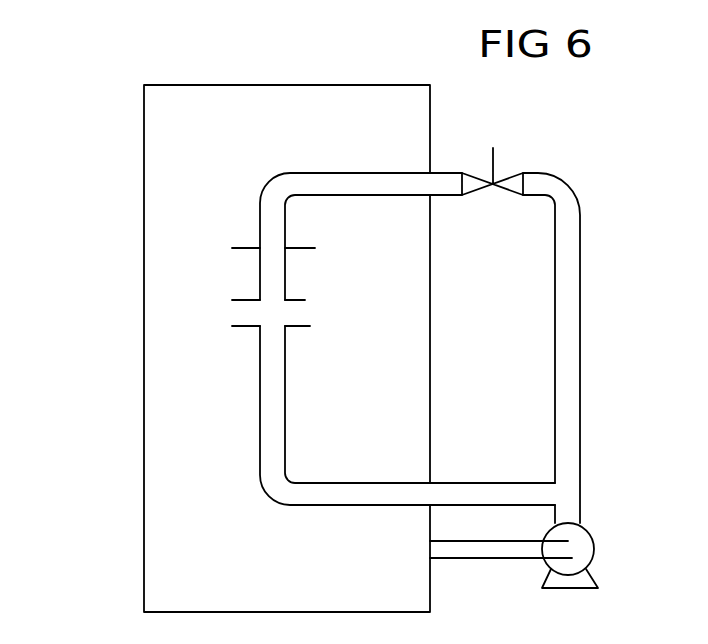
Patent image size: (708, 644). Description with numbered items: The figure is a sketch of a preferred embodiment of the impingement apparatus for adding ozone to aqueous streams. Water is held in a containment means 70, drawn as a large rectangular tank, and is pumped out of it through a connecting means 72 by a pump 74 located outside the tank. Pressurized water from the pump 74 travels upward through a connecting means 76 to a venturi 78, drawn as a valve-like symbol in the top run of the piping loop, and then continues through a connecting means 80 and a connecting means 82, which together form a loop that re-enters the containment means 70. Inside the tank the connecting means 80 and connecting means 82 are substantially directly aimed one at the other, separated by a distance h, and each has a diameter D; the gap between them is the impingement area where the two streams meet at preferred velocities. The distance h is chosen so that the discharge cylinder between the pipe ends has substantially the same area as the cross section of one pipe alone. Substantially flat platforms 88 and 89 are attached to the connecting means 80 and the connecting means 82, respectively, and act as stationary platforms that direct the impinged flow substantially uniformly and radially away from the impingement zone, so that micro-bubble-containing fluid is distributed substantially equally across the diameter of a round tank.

The containment means 70 is at (145, 262).
The connecting means 72 is at (498, 553).
The pump 74 is at (593, 538).
The connecting means 76 is at (580, 483).
The venturi 78 is at (512, 173).
The connecting means 80 is at (276, 176).
The connecting means 82 is at (295, 503).
The substantially flat platform 88 is at (300, 300).
The substantially flat platform 89 is at (295, 326).